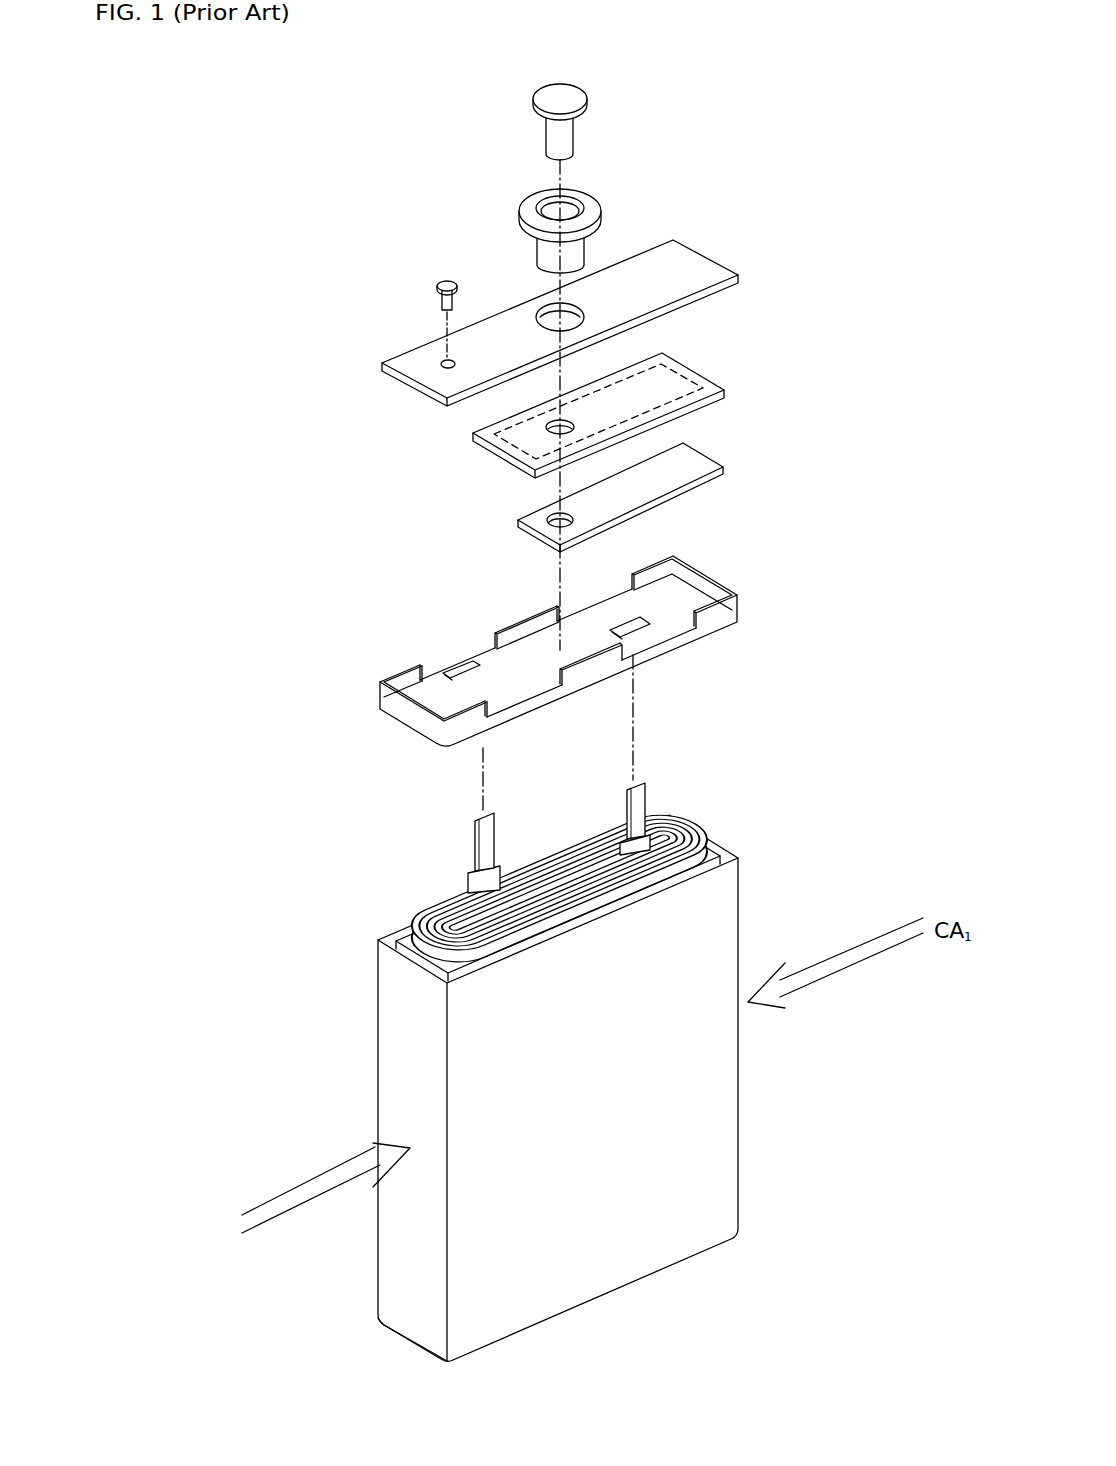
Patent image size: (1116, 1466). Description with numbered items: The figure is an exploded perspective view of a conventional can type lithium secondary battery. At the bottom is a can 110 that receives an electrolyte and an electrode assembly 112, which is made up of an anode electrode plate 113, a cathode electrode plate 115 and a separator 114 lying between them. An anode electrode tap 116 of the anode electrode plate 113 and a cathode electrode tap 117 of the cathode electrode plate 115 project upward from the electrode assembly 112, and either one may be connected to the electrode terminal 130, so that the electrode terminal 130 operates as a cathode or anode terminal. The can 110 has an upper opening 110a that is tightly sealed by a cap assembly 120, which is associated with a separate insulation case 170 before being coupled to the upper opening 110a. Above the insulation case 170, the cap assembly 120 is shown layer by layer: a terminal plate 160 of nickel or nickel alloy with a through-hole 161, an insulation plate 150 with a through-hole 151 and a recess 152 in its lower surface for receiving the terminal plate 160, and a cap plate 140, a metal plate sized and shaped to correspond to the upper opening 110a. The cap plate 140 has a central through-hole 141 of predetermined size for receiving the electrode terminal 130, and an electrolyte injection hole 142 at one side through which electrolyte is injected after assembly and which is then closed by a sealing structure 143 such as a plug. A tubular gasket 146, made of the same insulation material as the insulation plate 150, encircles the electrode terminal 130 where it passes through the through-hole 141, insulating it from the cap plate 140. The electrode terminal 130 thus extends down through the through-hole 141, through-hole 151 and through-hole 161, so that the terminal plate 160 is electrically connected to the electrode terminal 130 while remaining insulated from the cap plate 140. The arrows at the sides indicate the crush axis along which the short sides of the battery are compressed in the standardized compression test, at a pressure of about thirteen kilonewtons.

The can 110 is at (722, 1142).
The upper opening 110a is at (717, 855).
The electrode assembly 112 is at (595, 835).
The anode electrode plate 113 is at (702, 827).
The separator 114 is at (688, 823).
The cathode electrode plate 115 is at (675, 828).
The anode electrode tap 116 is at (487, 847).
The cathode electrode tap 117 is at (633, 808).
The cap assembly 120 is at (616, 337).
The electrode terminal 130 is at (672, 122).
The cap plate 140 is at (582, 314).
The through-hole 141 is at (543, 305).
The electrolyte injection hole 142 is at (450, 362).
The sealing structure 143 is at (445, 283).
The gasket 146 is at (527, 207).
The insulation plate 150 is at (592, 421).
The through-hole 151 is at (547, 430).
The recess 152 is at (497, 440).
The terminal plate 160 is at (632, 496).
The through-hole 161 is at (527, 543).
The insulation case 170 is at (390, 703).